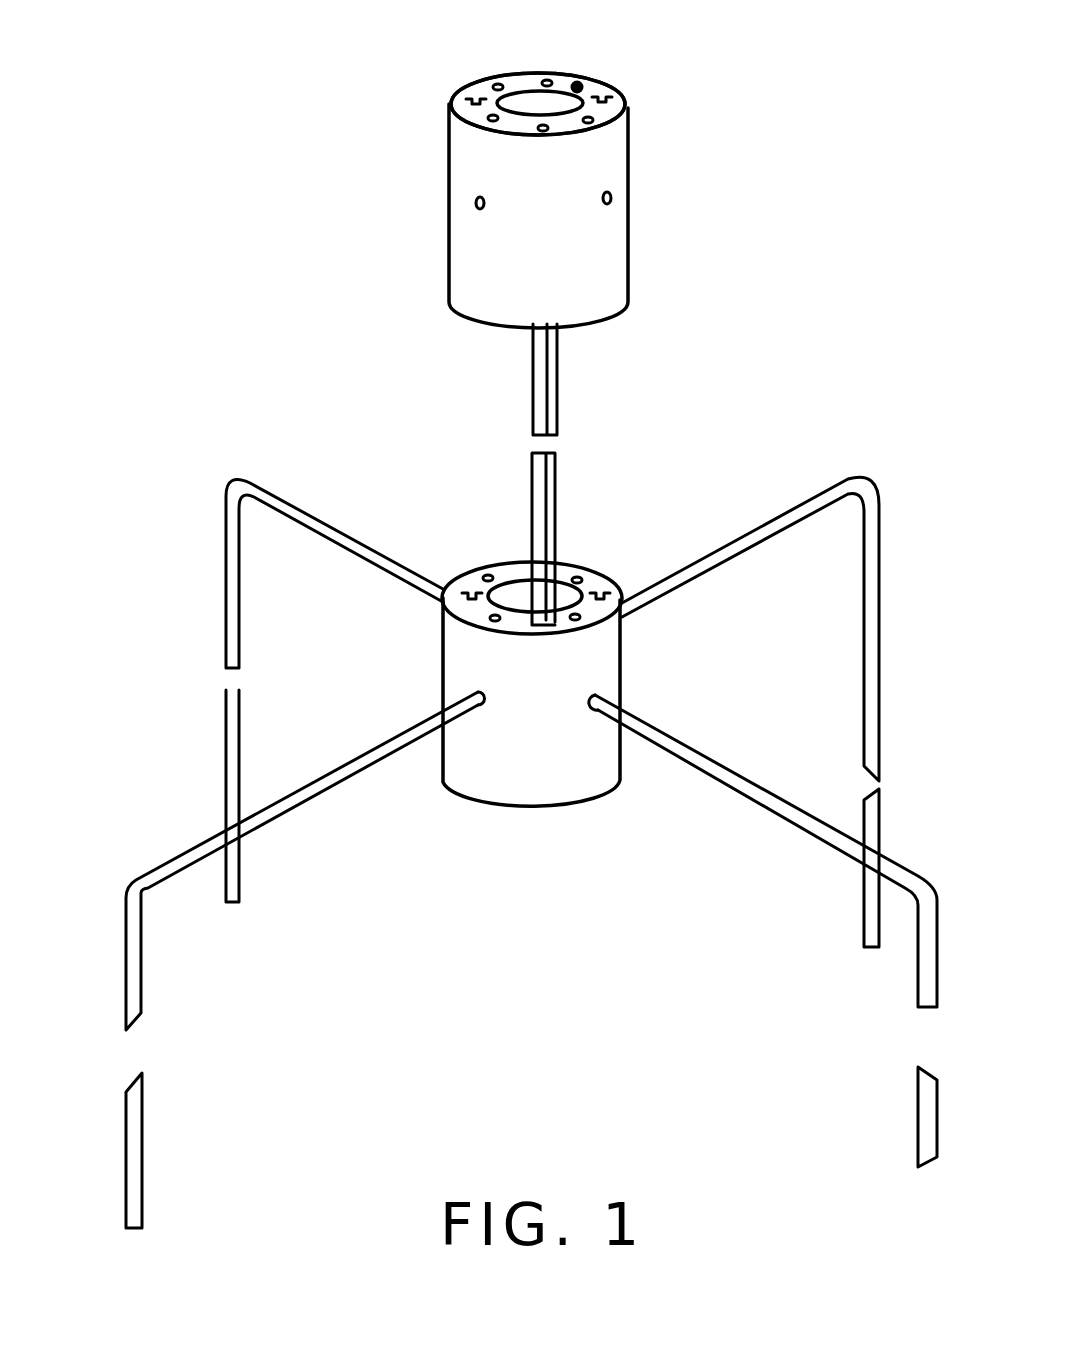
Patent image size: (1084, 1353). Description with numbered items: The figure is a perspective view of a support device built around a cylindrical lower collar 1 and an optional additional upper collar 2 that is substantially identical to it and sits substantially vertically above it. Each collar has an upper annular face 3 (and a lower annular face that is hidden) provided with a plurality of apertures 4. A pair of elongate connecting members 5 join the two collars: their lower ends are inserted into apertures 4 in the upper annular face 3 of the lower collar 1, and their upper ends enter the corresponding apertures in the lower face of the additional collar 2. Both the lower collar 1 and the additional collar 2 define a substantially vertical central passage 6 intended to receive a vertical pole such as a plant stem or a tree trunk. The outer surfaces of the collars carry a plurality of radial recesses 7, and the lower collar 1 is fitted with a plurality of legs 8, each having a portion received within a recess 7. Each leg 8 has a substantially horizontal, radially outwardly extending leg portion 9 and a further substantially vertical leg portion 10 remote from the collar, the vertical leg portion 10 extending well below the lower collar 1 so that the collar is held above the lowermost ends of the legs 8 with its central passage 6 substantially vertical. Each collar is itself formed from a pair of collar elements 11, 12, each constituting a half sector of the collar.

The lower collar 1 is at (493, 773).
The additional upper collar 2 is at (463, 263).
The upper annular face 3 is at (527, 100).
The apertures 4 is at (578, 85).
The elongate connecting members 5 is at (530, 477).
The central passage 6 is at (530, 102).
The radial recesses 7 is at (613, 206).
The legs 8 is at (697, 580).
The horizontal leg portion 9 is at (756, 529).
The vertical leg portion 10 is at (868, 560).
The collar element 11 is at (618, 98).
The collar element 12 is at (608, 120).